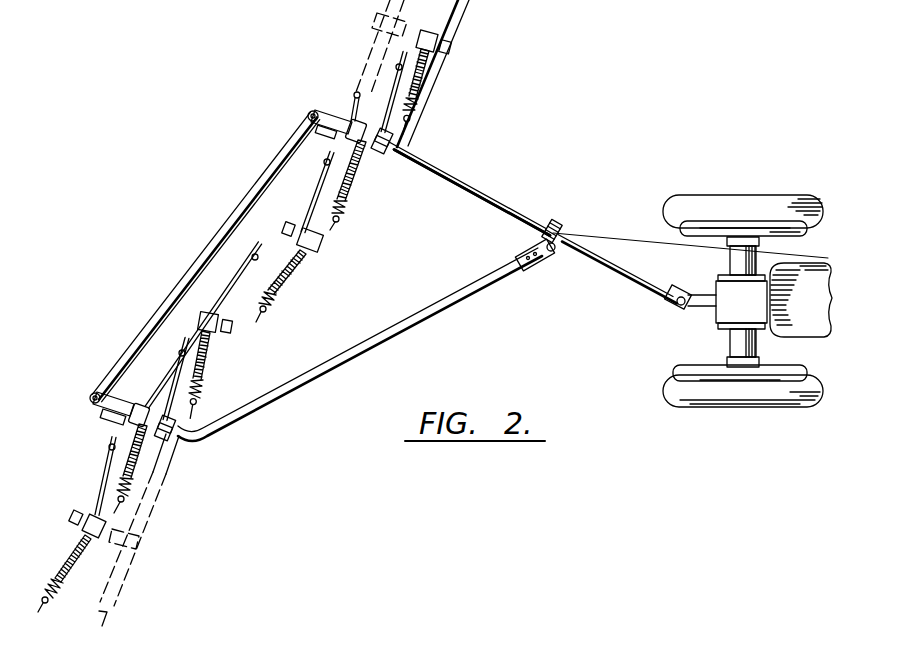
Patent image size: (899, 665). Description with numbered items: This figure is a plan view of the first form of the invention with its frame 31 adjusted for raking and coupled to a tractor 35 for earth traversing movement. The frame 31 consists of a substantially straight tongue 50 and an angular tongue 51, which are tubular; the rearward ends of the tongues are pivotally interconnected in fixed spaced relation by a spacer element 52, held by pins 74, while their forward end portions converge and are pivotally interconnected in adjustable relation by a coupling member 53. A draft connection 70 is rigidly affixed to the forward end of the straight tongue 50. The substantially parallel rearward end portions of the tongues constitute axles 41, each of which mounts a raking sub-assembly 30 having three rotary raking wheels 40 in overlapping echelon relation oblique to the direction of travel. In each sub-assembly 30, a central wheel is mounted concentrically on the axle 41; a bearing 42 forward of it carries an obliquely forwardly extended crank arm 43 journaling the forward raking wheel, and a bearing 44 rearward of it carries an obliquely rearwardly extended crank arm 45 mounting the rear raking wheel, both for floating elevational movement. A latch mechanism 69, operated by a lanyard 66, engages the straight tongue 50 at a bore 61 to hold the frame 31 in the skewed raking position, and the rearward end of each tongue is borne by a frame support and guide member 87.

The raking sub-assembly 30 is at (434, 92).
The frame 31 is at (498, 196).
The tractor 35 is at (716, 326).
The rotary raking wheel 40 is at (462, 4).
The axle 41 is at (393, 152).
The bearing 42 is at (380, 152).
The crank arm 43 is at (412, 97).
The bearing 44 is at (355, 120).
The crank arm 45 is at (322, 240).
The straight tongue 50 is at (463, 176).
The angular tongue 51 is at (352, 351).
The spacer element 52 is at (220, 228).
The coupling member 53 is at (568, 221).
The bore 61 is at (644, 285).
The operating lanyard 66 is at (618, 240).
The latch mechanism 69 is at (540, 233).
The draft connection 70 is at (674, 289).
The pin 74 is at (310, 112).
The frame support and guide member 87 is at (324, 140).